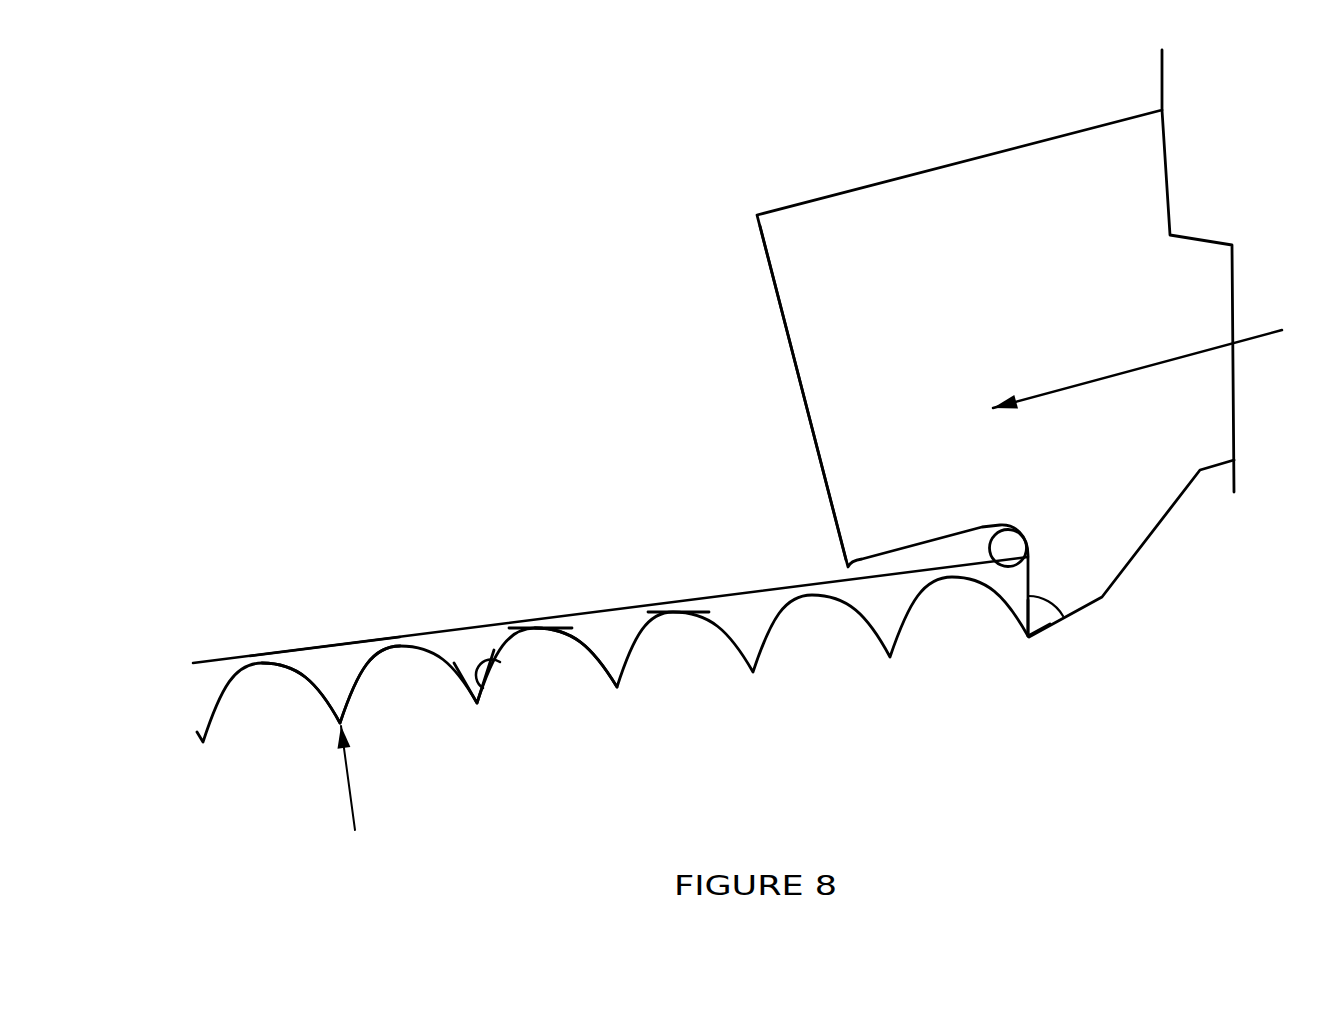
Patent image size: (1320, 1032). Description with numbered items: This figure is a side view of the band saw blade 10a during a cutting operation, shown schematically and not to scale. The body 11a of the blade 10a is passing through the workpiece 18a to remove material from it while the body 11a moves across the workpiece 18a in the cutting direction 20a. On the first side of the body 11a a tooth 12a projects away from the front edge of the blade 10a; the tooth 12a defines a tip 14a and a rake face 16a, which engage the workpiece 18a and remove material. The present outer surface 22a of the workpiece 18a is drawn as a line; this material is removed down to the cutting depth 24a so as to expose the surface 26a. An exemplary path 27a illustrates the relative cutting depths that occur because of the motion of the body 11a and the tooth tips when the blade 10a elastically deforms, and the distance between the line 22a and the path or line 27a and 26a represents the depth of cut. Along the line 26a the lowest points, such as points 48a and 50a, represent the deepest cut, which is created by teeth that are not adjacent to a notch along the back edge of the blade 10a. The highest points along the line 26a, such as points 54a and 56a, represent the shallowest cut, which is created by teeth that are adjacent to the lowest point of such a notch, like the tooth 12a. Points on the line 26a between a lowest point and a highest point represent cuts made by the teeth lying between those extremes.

The blade 10a is at (813, 170).
The body 11a is at (898, 300).
The tooth 12a is at (1100, 543).
The tip 14a is at (1028, 636).
The rake face 16a is at (993, 530).
The workpiece 18a is at (776, 776).
The cutting direction 20a is at (1077, 383).
The present outer surface 22a is at (567, 612).
The cutting depth 24a is at (323, 642).
The surface 26a is at (484, 690).
The path 27a is at (337, 488).
The point 48a is at (477, 703).
The point 50a is at (617, 687).
The point 54a is at (532, 630).
The point 56a is at (673, 612).